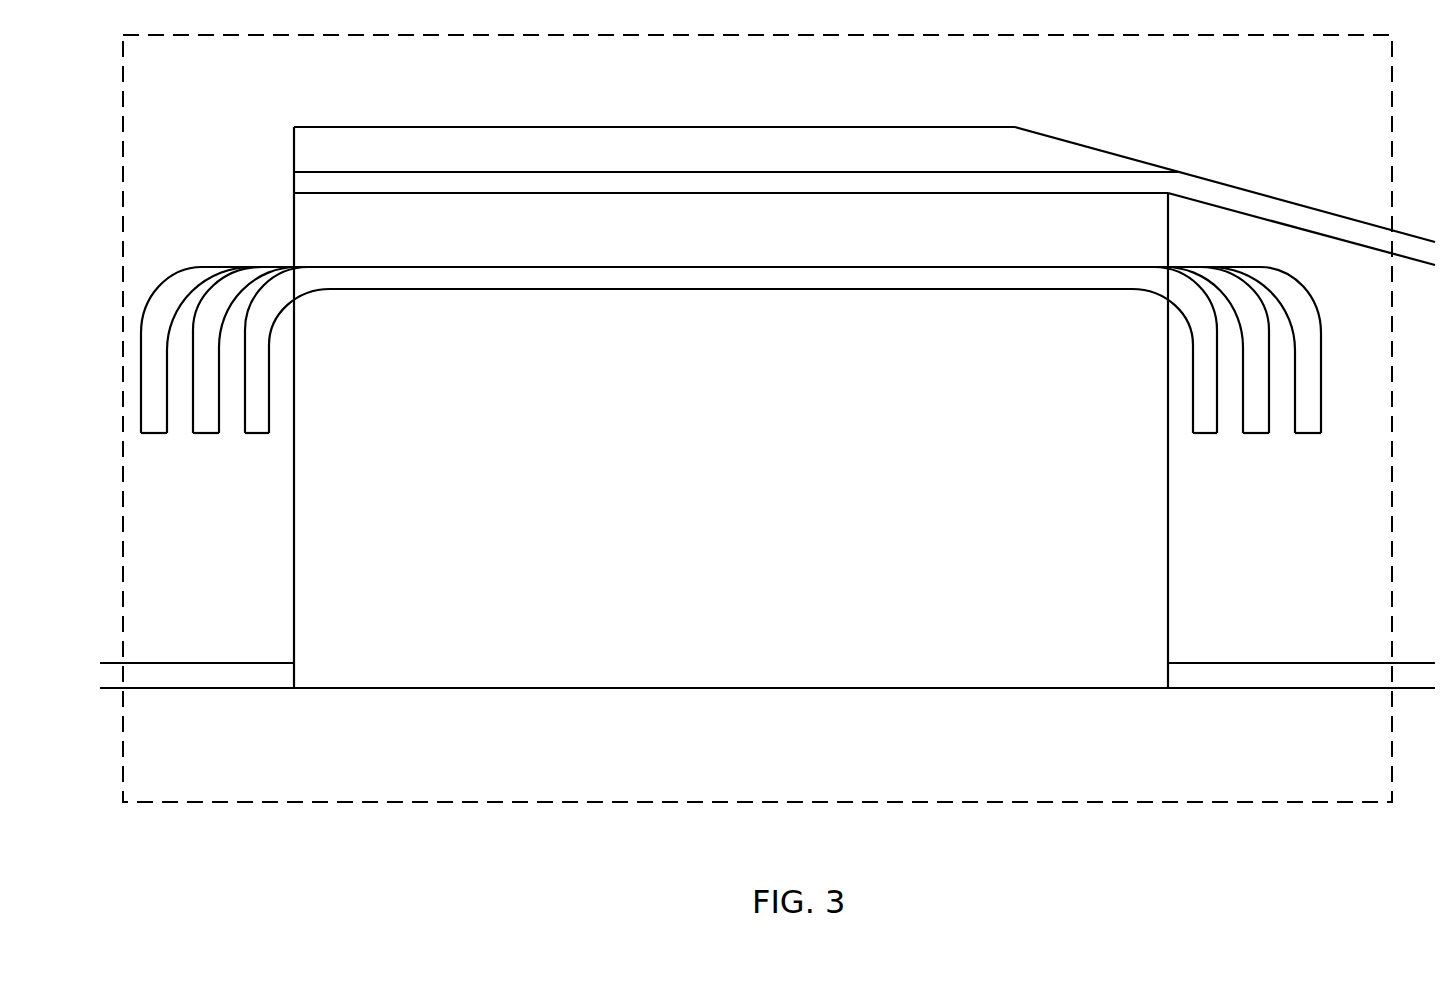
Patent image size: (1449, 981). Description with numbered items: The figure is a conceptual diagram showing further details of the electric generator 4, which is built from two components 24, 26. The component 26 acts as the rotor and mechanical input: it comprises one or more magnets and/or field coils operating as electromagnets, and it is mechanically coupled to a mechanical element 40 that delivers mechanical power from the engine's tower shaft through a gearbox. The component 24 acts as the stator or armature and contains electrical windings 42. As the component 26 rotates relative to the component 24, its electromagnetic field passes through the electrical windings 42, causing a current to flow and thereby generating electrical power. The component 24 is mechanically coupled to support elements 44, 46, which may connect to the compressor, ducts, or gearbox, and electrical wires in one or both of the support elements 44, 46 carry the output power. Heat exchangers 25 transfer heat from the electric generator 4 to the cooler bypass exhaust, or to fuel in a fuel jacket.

The electric generator 4 is at (152, 129).
The component 24 is at (685, 688).
The heat exchangers 25 is at (294, 240).
The component 26 is at (523, 127).
The mechanical element 40 is at (1262, 195).
The electrical windings 42 is at (1265, 445).
The support element 44 is at (243, 663).
The support element 46 is at (1211, 663).